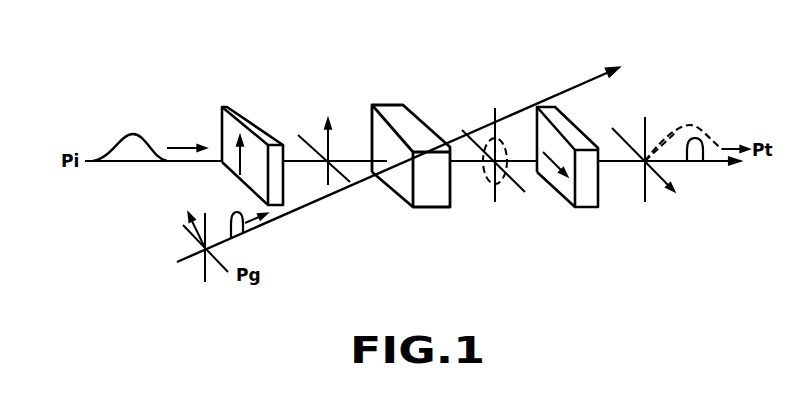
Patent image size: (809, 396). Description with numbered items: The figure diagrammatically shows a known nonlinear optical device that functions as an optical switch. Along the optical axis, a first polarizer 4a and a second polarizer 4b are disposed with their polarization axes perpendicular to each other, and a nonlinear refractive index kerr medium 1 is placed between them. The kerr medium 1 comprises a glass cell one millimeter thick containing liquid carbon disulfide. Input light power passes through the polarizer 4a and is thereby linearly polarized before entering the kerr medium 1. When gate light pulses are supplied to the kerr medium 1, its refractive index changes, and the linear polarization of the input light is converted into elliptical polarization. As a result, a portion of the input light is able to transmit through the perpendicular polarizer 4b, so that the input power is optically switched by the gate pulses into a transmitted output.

The nonlinear refractive index kerr medium 1 is at (402, 105).
The polarizer 4a is at (243, 107).
The polarizer 4b is at (575, 122).